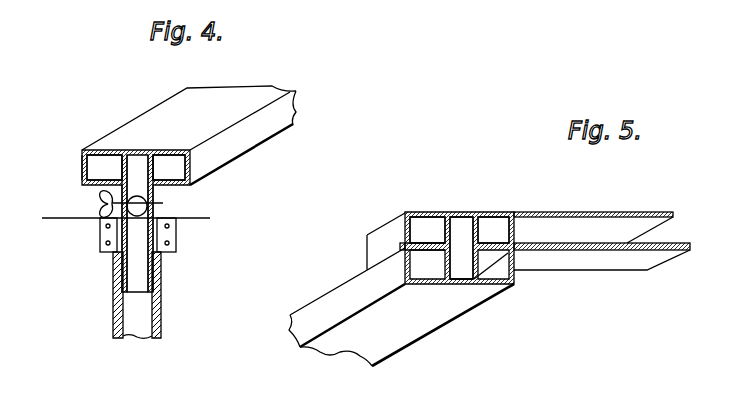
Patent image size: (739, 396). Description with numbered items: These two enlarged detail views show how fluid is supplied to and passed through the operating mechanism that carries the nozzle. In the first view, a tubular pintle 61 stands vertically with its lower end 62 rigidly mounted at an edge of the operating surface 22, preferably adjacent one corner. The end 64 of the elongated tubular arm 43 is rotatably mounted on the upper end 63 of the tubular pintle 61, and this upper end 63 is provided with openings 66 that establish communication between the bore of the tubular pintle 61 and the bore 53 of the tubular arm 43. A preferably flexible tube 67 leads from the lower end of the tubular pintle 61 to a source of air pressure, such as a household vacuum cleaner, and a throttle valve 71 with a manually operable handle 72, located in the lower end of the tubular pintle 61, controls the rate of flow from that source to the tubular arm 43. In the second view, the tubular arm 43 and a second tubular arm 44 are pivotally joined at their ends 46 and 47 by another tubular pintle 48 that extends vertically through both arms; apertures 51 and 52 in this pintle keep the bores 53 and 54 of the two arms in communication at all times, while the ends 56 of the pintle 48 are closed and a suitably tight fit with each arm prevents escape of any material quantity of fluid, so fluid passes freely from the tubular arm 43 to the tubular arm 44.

In FIG. 4, the operating surface 22 is at (61, 218).
In FIG. 4, the tubular arm 43 is at (182, 100).
In FIG. 5, the tubular arm 43 is at (388, 359).
In FIG. 5, the tubular arm 44 is at (645, 212).
In FIG. 5, the end of arm 46 is at (500, 294).
In FIG. 5, the end of arm 47 is at (421, 212).
In FIG. 5, the tubular pintle 48 is at (465, 212).
In FIG. 5, the aperture 51 is at (446, 259).
In FIG. 5, the aperture 52 is at (478, 231).
In FIG. 4, the bore 53 is at (97, 160).
In FIG. 5, the bore 53 is at (498, 271).
In FIG. 5, the bore 54 is at (567, 223).
In FIG. 5, the end of tube 56 is at (462, 279).
In FIG. 4, the tubular pintle 61 is at (172, 173).
In FIG. 4, the lower end 62 is at (177, 235).
In FIG. 4, the upper end 63 is at (139, 150).
In FIG. 4, the end of arm 64 is at (105, 133).
In FIG. 4, the openings 66 is at (122, 161).
In FIG. 4, the flexible tube 67 is at (115, 277).
In FIG. 4, the throttle valve 71 is at (156, 205).
In FIG. 4, the handle 72 is at (101, 220).